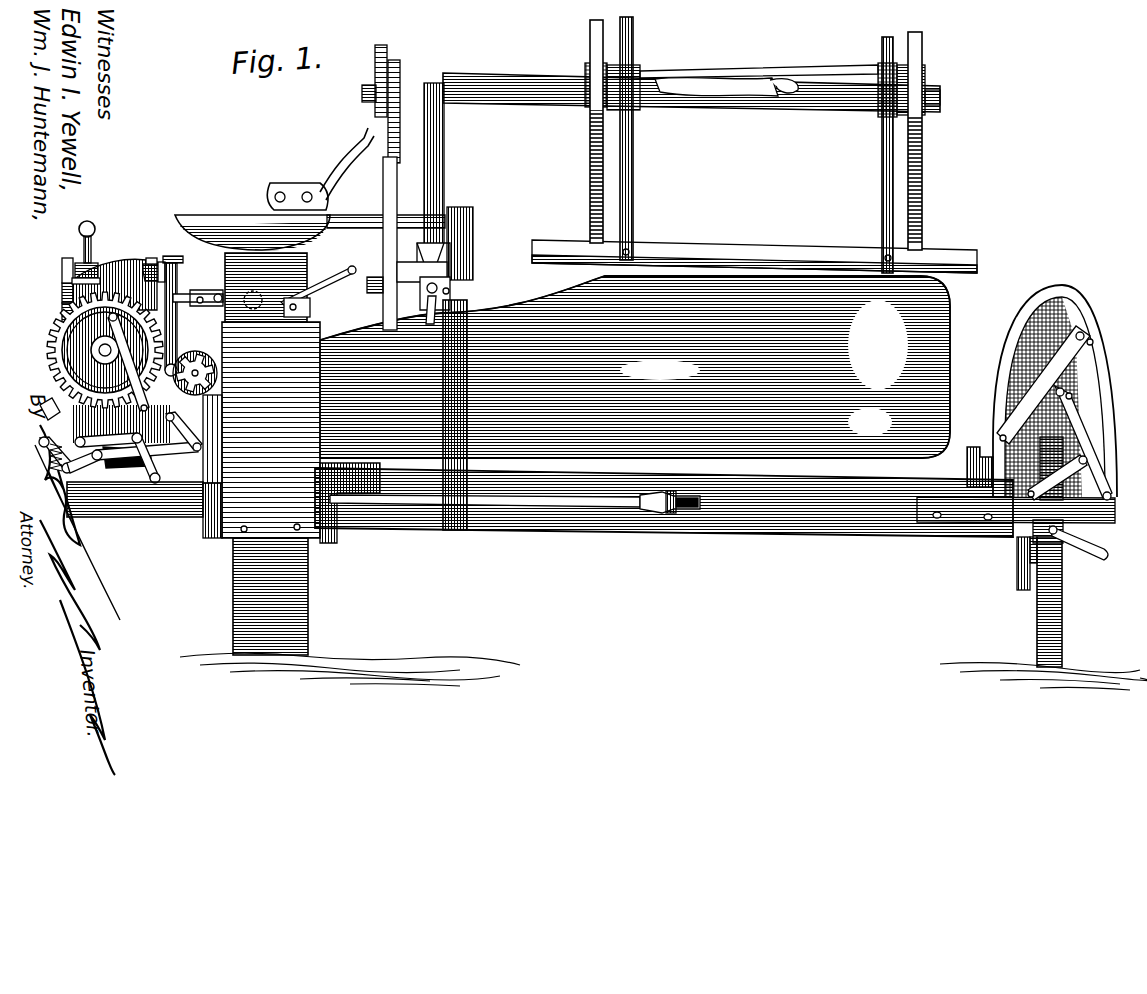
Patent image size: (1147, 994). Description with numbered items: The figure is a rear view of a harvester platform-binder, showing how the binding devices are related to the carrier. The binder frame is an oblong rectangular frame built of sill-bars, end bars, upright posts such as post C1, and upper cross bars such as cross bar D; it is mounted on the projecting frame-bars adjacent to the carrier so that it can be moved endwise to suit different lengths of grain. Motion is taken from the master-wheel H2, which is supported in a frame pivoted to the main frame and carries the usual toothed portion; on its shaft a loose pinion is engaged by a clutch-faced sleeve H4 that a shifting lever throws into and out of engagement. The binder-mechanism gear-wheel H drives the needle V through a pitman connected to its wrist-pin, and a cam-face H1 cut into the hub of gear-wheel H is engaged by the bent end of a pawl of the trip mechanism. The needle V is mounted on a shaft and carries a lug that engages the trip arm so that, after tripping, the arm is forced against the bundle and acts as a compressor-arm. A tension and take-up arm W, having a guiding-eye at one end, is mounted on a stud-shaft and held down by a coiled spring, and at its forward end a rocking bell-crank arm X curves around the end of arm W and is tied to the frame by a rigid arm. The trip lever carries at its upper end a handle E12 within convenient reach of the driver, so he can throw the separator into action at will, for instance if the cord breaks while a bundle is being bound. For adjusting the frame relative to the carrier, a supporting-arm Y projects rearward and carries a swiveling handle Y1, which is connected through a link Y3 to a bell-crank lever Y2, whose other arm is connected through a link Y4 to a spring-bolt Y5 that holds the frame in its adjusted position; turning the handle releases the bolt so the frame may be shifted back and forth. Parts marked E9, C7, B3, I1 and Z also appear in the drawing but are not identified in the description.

The swiveling handle Y1 is at (95, 233).
The link Y3 is at (66, 262).
The supporting-arm Y is at (100, 266).
The adjusting knob E9 is at (150, 265).
The cap C7 is at (161, 262).
The handle E12 is at (183, 260).
The bell-crank lever Y2 is at (62, 272).
The upright post C1 is at (75, 290).
The connecting rod B3 is at (181, 296).
The link Y4 is at (62, 311).
The binder-mechanism gear-wheel H is at (105, 350).
The needle V is at (105, 350).
The master-wheel H2 is at (120, 362).
The spring-bolt Y5 is at (52, 435).
The clutch-faced sleeve H4 is at (230, 328).
The side panel I1 is at (236, 369).
The rocking bell-crank arm X is at (226, 411).
The upper or cross bar D is at (224, 447).
The tension and take-up arm W is at (135, 499).
The leg Z is at (134, 510).
The cam-face H1 is at (188, 455).